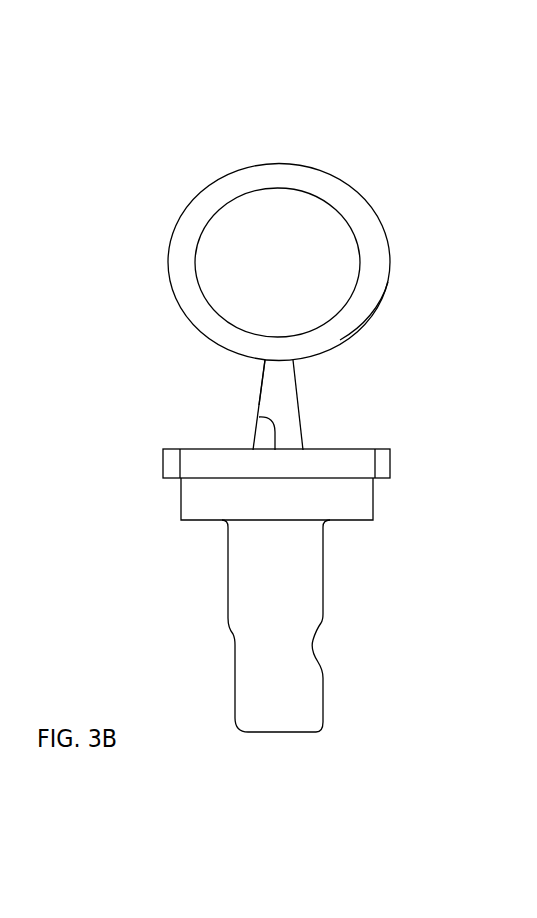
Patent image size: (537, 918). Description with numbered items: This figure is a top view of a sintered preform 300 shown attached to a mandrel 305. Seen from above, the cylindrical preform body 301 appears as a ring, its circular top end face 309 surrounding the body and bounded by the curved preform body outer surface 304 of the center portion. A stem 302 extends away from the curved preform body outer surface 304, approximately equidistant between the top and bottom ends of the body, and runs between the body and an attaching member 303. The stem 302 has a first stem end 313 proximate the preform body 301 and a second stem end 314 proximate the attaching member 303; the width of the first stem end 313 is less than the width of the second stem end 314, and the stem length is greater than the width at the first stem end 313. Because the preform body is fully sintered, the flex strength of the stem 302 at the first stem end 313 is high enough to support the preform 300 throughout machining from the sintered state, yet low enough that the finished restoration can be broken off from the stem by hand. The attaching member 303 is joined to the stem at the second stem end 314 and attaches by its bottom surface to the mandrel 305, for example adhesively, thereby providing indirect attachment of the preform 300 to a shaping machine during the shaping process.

The preform 300 is at (347, 148).
The cylindrical preform body 301 is at (222, 173).
The top end face 309 is at (368, 237).
The curved preform body outer surface 304 is at (383, 298).
The stem 302 is at (298, 383).
The first stem end 313 is at (267, 366).
The second stem end 314 is at (260, 415).
The attaching member 303 is at (358, 462).
The mandrel 305 is at (325, 582).